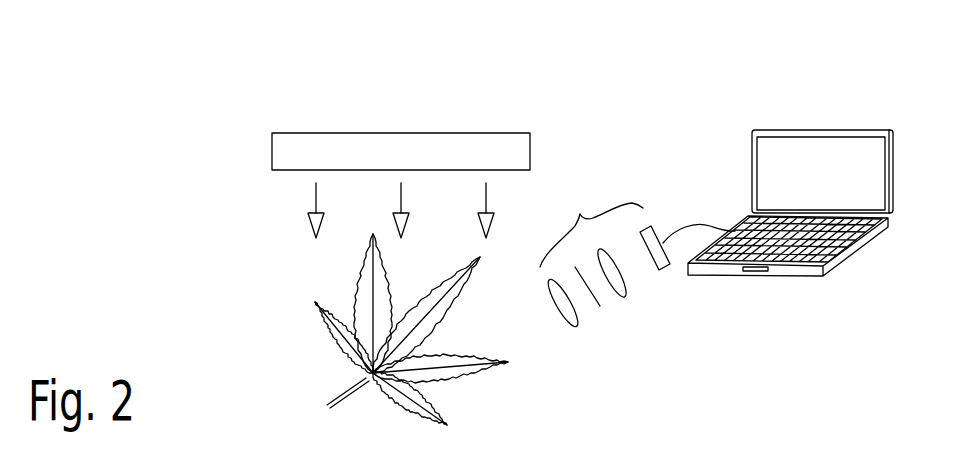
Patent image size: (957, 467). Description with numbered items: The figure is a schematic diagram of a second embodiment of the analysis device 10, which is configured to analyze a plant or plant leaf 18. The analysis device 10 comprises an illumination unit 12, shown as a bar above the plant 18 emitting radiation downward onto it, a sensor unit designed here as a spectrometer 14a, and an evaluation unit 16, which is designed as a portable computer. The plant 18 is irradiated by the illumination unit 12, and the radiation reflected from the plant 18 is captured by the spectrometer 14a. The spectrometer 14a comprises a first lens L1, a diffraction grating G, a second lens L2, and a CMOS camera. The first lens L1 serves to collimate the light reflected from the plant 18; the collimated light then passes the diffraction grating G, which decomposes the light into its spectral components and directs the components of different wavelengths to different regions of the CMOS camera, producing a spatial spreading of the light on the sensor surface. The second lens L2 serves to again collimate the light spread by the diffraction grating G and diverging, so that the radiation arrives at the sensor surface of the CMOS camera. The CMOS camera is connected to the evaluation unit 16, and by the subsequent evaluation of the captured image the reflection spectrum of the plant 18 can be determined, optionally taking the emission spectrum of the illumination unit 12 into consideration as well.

The analysis device 10 is at (250, 5).
The illumination unit 12 is at (519, 108).
The spectrometer 14a is at (594, 195).
The evaluation unit 16 is at (816, 100).
The plant 18 is at (305, 387).
The first lens L1 is at (577, 327).
The diffraction grating G is at (600, 306).
The second lens L2 is at (625, 297).
The CMOS camera CMOS is at (666, 268).